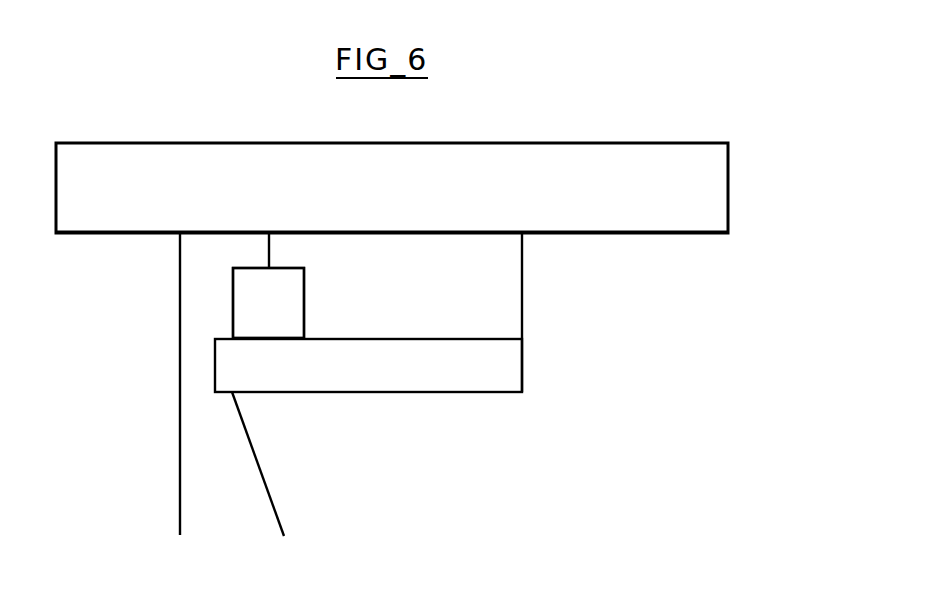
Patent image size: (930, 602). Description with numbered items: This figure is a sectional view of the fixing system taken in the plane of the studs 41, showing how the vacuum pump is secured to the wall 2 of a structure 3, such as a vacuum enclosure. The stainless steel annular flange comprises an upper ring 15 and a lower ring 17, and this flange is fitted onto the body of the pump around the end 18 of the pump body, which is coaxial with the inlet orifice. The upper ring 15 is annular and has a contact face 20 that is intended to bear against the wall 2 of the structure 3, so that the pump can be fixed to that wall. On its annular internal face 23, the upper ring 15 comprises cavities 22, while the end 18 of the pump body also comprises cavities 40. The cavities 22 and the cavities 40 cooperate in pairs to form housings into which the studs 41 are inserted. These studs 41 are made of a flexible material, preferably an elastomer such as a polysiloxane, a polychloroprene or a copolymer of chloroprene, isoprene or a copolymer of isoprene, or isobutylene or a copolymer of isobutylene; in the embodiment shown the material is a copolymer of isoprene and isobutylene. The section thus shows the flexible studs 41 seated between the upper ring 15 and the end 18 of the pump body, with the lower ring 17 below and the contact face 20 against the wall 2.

The wall 2 is at (670, 233).
The structure 3 is at (106, 157).
The upper ring 15 is at (495, 320).
The lower ring 17 is at (267, 380).
The end of the pump body 18 is at (192, 255).
The contact face 20 is at (491, 232).
The cavities 22 is at (305, 310).
The annular internal face 23 is at (267, 245).
The cavities 40 is at (233, 285).
The studs 41 is at (253, 310).